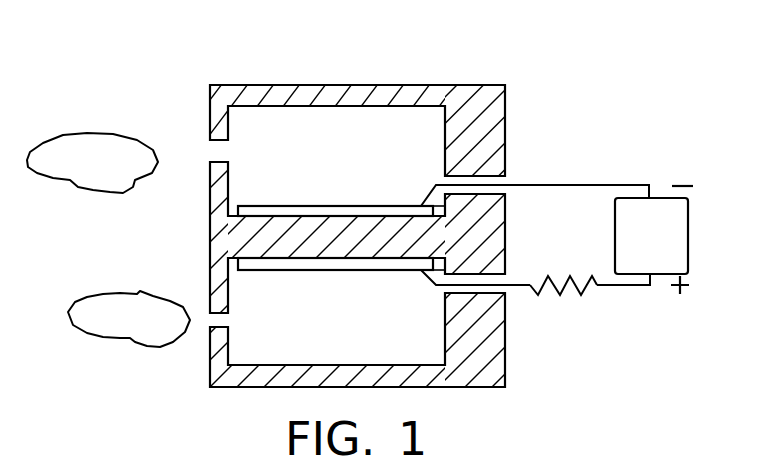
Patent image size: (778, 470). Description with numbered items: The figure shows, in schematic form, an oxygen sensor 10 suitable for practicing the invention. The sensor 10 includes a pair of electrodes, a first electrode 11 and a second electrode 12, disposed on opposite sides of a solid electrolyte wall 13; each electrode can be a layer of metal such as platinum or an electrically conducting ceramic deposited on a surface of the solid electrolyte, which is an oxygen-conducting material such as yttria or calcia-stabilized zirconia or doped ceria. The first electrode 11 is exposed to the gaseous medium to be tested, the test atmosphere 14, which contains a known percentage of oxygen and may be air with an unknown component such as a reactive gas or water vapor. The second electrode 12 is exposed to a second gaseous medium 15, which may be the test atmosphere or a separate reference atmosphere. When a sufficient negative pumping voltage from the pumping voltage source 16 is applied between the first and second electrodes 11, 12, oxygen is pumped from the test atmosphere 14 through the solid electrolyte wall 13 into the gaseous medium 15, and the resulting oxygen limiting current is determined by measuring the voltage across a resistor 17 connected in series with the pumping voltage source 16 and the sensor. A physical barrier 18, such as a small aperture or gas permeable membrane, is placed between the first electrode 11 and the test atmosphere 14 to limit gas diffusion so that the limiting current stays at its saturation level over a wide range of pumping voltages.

The oxygen sensor 10 is at (495, 83).
The first electrode 11 is at (348, 205).
The second electrode 12 is at (360, 275).
The solid electrolyte wall 13 is at (303, 241).
The test atmosphere 14 is at (108, 193).
The second gaseous medium 15 is at (122, 342).
The pumping voltage source 16 is at (689, 232).
The resistor 17 is at (576, 300).
The physical barrier 18 is at (202, 143).